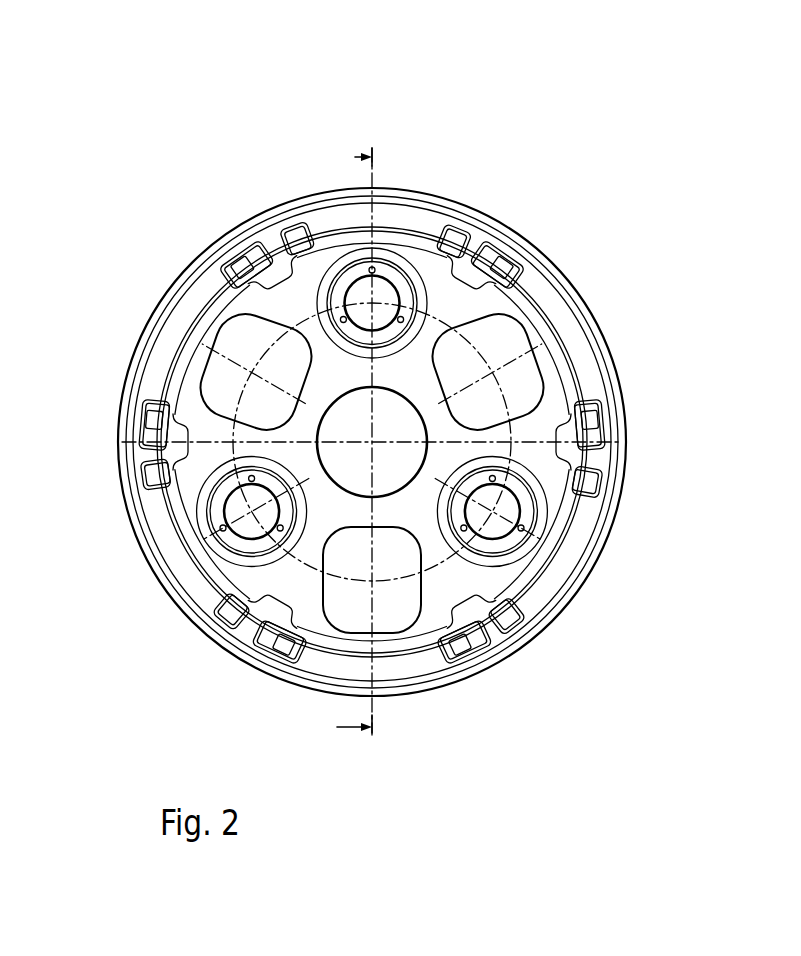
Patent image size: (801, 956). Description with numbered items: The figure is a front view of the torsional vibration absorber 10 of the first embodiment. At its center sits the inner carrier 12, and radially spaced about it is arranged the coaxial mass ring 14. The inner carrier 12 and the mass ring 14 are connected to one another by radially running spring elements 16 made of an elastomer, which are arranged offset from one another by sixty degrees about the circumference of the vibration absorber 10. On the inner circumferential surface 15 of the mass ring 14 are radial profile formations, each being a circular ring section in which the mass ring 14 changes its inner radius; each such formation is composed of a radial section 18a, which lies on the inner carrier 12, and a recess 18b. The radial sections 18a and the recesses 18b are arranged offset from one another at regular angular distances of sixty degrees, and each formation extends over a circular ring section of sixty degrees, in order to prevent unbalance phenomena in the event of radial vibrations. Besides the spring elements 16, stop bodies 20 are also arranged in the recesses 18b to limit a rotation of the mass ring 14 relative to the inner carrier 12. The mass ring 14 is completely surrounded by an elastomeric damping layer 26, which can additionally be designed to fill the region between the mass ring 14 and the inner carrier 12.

The vibration absorber 10 is at (393, 411).
The inner carrier 12 is at (550, 382).
The mass ring 14 is at (590, 518).
The inner circumferential surface 15 is at (333, 237).
The spring elements 16 is at (468, 240).
The radial section 18a is at (405, 220).
The recess 18b is at (527, 200).
The stop bodies 20 is at (518, 266).
The elastomeric damping layer 26 is at (542, 285).